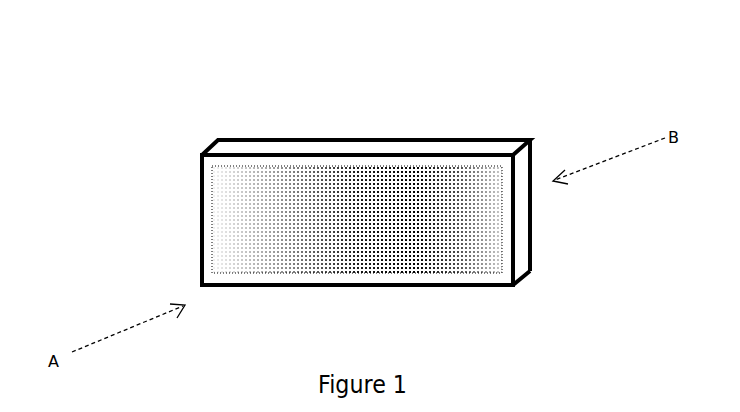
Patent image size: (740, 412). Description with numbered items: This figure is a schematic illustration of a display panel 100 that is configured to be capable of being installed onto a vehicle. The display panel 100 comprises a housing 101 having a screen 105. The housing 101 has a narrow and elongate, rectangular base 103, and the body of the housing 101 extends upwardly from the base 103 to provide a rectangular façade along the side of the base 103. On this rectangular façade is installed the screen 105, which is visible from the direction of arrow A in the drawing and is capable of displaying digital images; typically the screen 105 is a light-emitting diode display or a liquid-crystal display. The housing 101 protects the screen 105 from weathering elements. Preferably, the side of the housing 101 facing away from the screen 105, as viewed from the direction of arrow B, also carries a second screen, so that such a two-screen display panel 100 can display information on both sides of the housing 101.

The display panel 100 is at (366, 154).
The housing 101 is at (417, 128).
The base 103 is at (524, 304).
The screen 105 is at (466, 186).